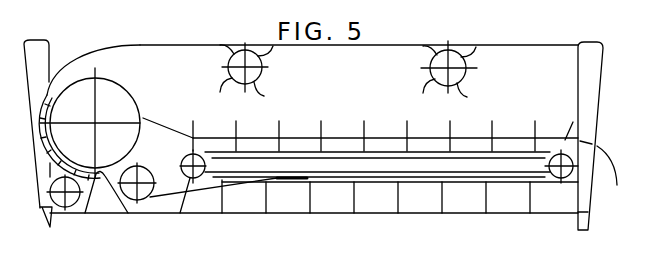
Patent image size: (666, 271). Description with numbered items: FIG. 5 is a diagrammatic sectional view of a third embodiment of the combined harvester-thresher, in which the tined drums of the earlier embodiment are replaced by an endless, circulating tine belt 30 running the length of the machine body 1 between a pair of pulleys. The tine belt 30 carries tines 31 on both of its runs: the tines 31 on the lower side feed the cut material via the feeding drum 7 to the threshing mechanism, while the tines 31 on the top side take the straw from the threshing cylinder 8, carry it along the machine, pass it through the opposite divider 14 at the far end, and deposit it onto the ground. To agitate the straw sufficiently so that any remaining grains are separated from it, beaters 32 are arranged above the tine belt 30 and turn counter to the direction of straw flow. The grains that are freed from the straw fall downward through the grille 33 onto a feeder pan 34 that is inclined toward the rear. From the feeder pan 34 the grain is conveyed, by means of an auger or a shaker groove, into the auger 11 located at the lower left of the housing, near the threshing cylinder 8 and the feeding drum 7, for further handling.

The housing / base frame 1 is at (290, 213).
The feeding drum 7 is at (143, 195).
The threshing cylinder 8 is at (102, 87).
The auger 11 is at (72, 200).
The divider 14 is at (586, 52).
The tine belt 30 is at (297, 151).
The tines 31 is at (367, 124).
The beaters 32 is at (252, 73).
The grille 33 is at (217, 137).
The feeder pan 34 is at (513, 155).